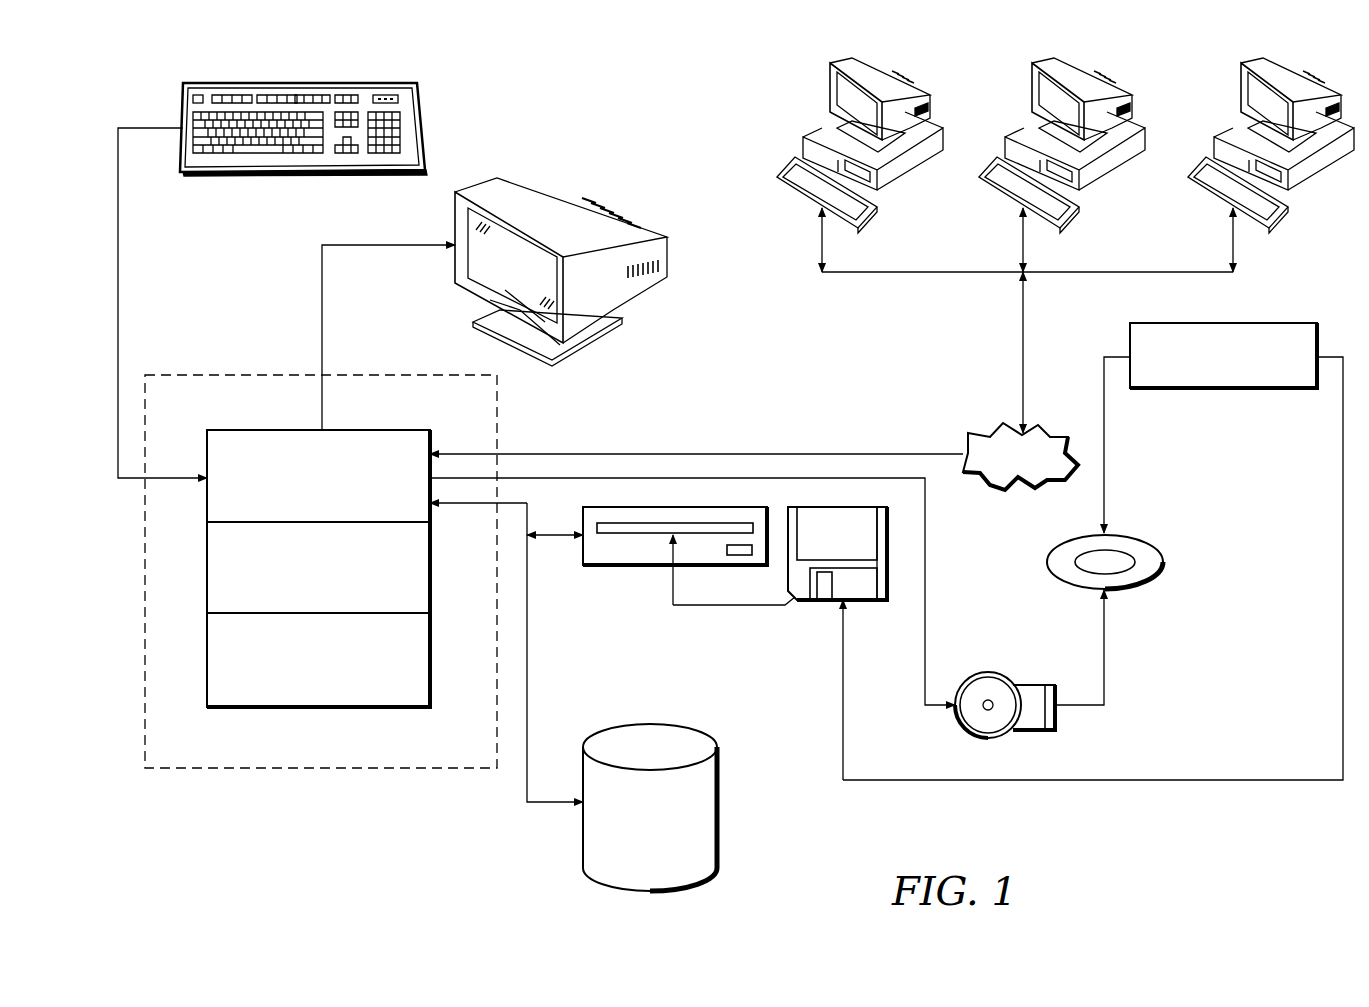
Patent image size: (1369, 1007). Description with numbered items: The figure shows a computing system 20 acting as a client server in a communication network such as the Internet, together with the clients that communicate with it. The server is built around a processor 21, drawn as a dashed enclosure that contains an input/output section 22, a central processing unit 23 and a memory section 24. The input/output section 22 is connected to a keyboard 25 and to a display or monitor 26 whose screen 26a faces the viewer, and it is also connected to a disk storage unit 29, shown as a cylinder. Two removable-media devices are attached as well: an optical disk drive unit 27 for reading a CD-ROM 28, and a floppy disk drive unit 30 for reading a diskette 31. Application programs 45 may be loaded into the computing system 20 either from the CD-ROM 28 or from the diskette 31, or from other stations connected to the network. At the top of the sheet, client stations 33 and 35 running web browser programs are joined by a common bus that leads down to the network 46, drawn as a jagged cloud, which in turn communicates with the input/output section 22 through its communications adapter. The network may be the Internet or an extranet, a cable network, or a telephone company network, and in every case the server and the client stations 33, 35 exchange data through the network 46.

The computing system 20 is at (557, 755).
The processor 21 is at (210, 373).
The input/output section 22 is at (260, 430).
The central processing unit 23 is at (432, 570).
The memory section 24 is at (432, 658).
The keyboard 25 is at (310, 83).
The display 26 is at (536, 259).
The display screen 26a is at (497, 278).
The optical disk drive unit 27 is at (1036, 666).
The CD-ROM 28 is at (1142, 519).
The disk storage unit 29 is at (718, 837).
The floppy disk drive unit 30 is at (627, 566).
The diskette 31 is at (865, 602).
The client station 33 is at (1032, 90).
The client station 35 is at (828, 90).
The application programs 45 is at (1273, 323).
The network 46 is at (1058, 415).